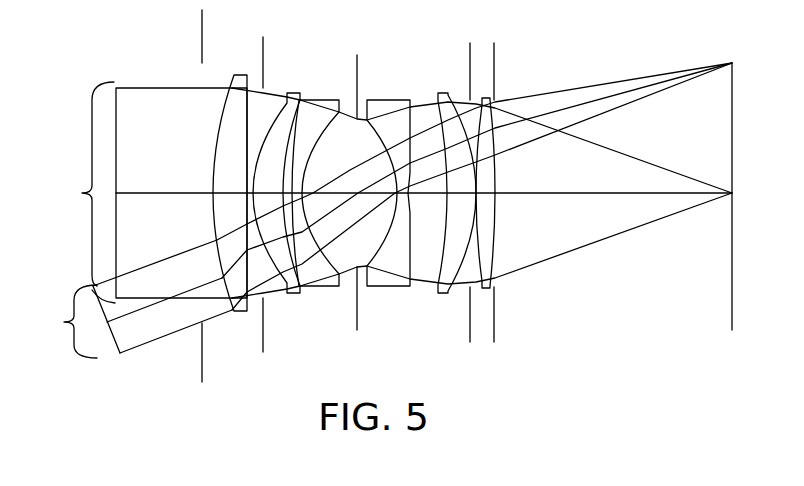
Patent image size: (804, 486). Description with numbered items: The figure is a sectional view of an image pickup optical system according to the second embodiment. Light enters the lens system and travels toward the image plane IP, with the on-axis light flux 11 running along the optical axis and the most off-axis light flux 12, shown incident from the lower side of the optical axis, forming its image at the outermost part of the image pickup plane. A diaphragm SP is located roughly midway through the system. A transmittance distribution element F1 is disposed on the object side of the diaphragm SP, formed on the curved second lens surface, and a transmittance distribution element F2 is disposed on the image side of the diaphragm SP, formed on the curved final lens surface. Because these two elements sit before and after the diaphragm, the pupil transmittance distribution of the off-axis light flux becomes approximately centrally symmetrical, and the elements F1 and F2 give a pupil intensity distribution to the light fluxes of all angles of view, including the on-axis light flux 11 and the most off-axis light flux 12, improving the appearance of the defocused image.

The on-axis light flux 11 is at (82, 193).
The most off-axis light flux 12 is at (64, 322).
The diaphragm SP is at (353, 179).
The image plane IP is at (733, 179).
The transmittance distribution element F1 is at (246, 289).
The transmittance distribution element F2 is at (499, 270).